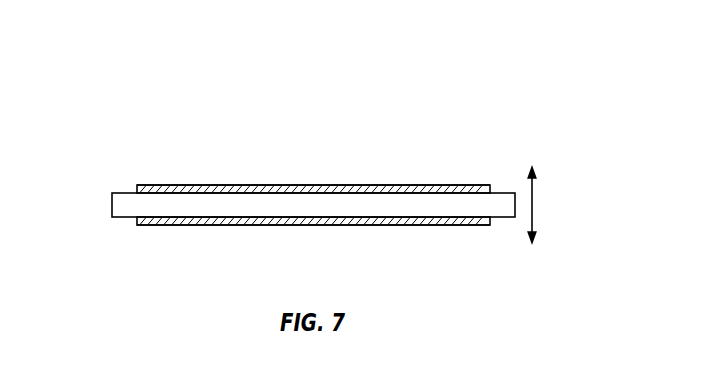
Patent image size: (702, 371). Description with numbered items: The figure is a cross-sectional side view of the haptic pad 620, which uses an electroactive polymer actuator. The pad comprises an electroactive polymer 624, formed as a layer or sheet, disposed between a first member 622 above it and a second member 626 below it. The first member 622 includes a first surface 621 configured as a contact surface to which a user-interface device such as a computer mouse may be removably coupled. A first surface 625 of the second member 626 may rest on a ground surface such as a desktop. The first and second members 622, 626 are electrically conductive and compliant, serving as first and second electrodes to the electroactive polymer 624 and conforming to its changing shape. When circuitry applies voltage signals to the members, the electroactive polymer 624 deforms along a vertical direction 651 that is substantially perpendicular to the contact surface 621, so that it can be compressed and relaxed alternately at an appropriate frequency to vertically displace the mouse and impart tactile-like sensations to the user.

The haptic pad 620 is at (104, 167).
The first surface 621 is at (208, 185).
The first member 622 is at (351, 176).
The electroactive polymer 624 is at (112, 205).
The first surface 625 is at (210, 226).
The second member 626 is at (350, 234).
The vertical direction 651 is at (532, 203).